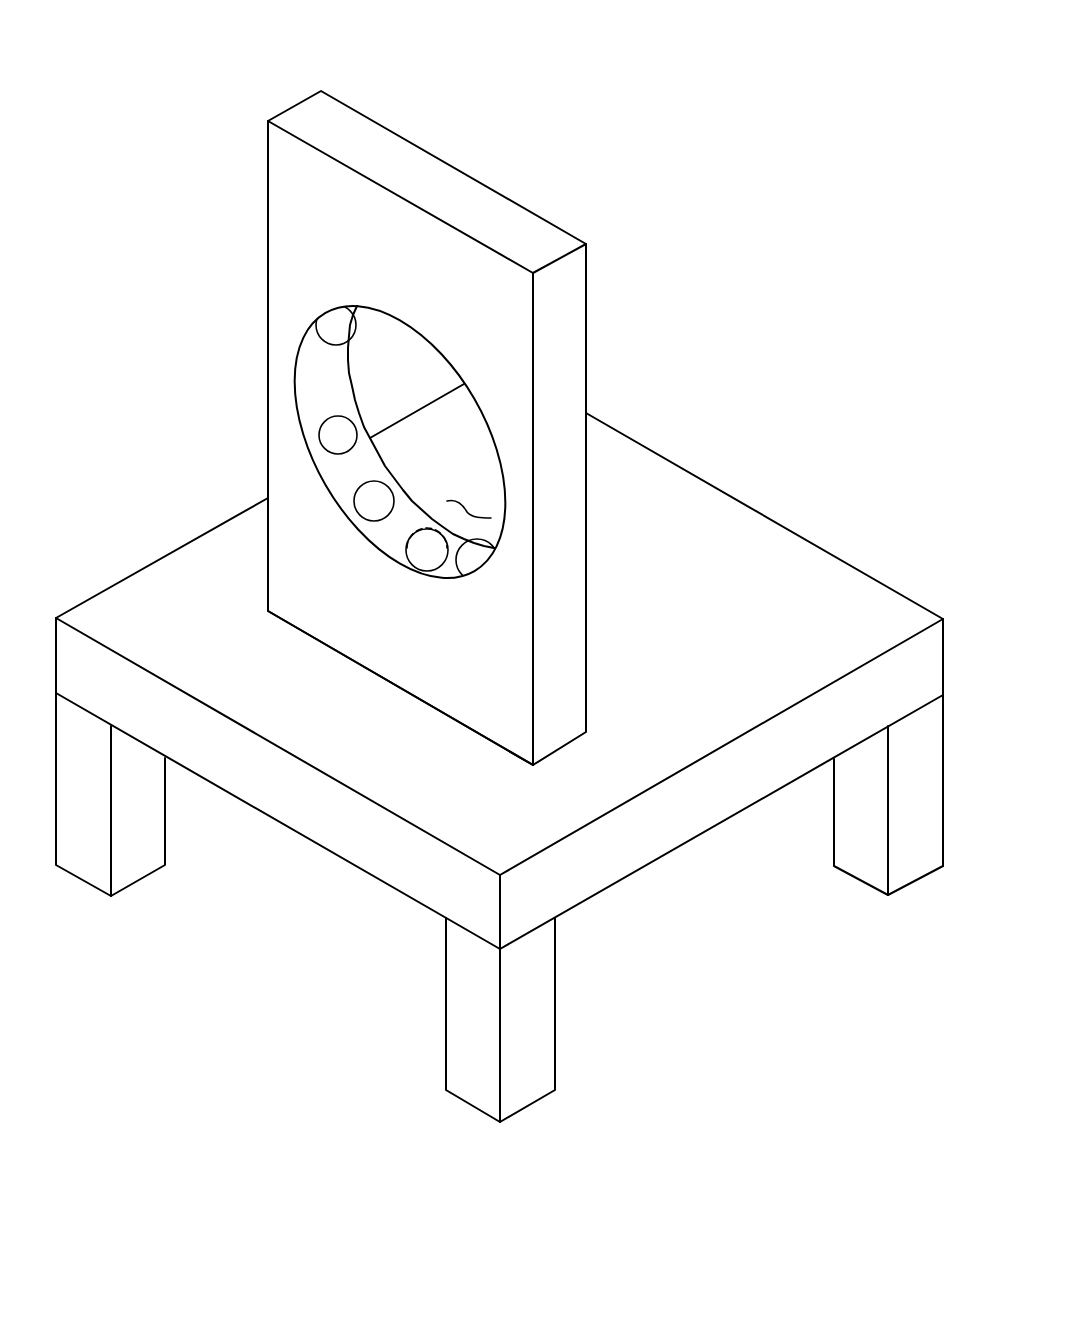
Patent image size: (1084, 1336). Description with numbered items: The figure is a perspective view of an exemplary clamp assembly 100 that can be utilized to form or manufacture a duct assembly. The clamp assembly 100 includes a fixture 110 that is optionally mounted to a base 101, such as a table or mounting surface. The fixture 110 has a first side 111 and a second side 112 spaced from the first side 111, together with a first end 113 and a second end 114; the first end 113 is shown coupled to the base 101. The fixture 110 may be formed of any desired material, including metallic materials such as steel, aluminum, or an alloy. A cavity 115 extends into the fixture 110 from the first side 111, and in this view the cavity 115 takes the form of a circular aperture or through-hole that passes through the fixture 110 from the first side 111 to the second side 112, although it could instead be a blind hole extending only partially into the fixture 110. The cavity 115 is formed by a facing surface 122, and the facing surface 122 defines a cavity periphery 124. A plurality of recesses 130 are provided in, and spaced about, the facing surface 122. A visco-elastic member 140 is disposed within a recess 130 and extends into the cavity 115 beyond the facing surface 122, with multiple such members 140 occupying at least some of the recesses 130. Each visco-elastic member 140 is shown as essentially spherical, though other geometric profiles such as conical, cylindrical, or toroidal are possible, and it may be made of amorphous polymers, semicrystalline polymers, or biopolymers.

The clamp assembly 100 is at (699, 96).
The base 101 is at (788, 554).
The fixture 110 is at (190, 251).
The first side 111 is at (373, 205).
The second side 112 is at (524, 205).
The first end 113 is at (305, 542).
The second end 114 is at (293, 177).
The cavity 115 is at (452, 504).
The facing surface 122 is at (313, 370).
The cavity periphery 124 is at (423, 333).
The recess 130 is at (417, 515).
The visco-elastic member 140 is at (375, 481).